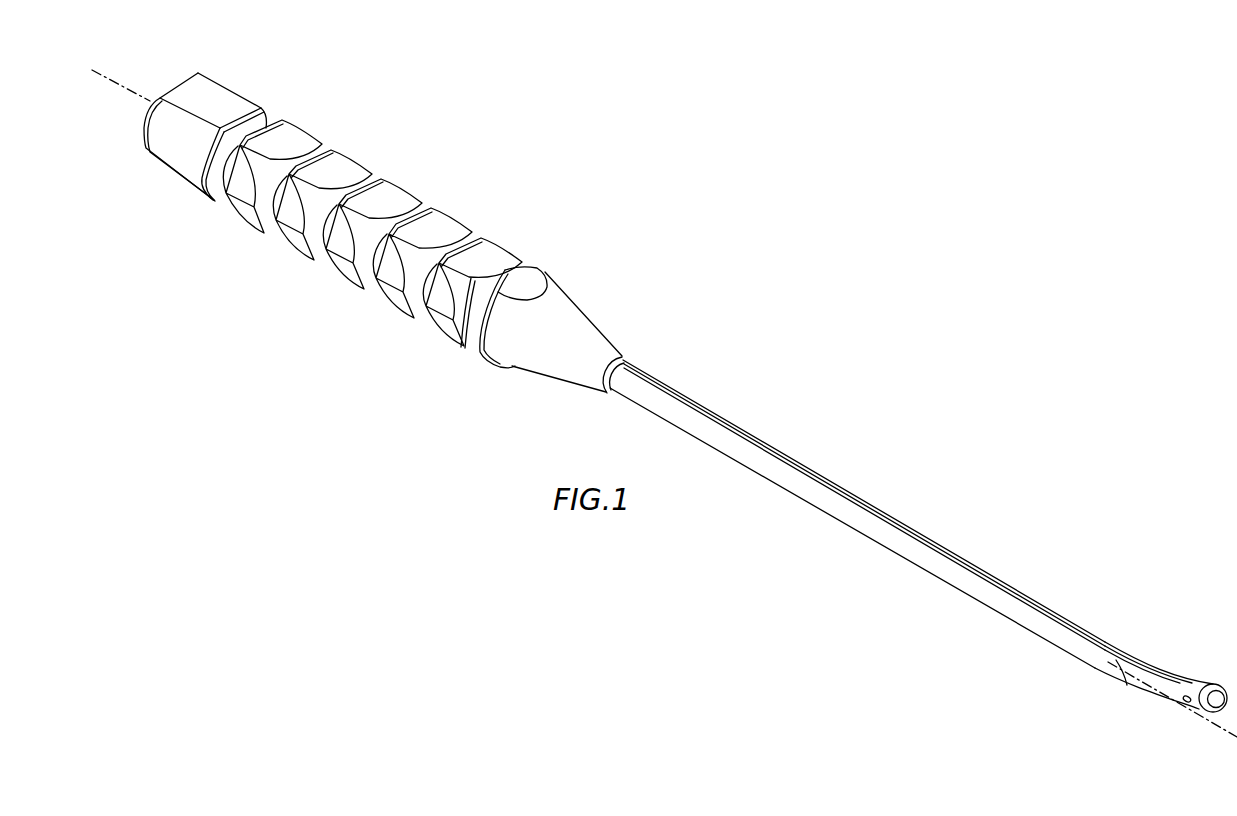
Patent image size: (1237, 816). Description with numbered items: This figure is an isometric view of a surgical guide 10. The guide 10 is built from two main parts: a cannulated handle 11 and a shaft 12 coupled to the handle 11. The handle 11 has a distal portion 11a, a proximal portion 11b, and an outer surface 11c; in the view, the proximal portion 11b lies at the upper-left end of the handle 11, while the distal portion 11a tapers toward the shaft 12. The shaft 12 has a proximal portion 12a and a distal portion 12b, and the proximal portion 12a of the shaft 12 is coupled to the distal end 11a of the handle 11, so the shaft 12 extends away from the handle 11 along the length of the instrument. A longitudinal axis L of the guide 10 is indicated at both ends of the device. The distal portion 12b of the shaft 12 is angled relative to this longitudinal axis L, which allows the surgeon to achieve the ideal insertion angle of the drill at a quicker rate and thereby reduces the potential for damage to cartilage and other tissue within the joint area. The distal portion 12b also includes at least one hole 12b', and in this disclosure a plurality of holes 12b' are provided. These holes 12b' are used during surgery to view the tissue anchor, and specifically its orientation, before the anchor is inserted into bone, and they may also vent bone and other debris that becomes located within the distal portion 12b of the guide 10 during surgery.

The guide 10 is at (670, 289).
The cannulated handle 11 is at (461, 221).
The distal portion of the handle 11a is at (553, 307).
The proximal portion of the handle 11b is at (282, 136).
The outer surface of the handle 11c is at (384, 190).
The shaft 12 is at (800, 485).
The proximal portion of the shaft 12a is at (638, 392).
The distal portion of the shaft 12b is at (1147, 681).
The hole 12b' is at (1181, 681).
The longitudinal axis L is at (123, 87).